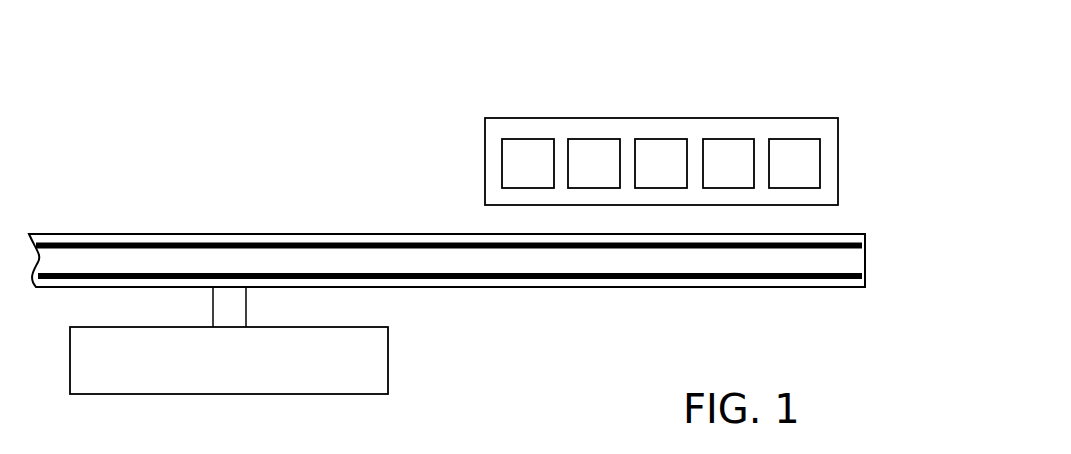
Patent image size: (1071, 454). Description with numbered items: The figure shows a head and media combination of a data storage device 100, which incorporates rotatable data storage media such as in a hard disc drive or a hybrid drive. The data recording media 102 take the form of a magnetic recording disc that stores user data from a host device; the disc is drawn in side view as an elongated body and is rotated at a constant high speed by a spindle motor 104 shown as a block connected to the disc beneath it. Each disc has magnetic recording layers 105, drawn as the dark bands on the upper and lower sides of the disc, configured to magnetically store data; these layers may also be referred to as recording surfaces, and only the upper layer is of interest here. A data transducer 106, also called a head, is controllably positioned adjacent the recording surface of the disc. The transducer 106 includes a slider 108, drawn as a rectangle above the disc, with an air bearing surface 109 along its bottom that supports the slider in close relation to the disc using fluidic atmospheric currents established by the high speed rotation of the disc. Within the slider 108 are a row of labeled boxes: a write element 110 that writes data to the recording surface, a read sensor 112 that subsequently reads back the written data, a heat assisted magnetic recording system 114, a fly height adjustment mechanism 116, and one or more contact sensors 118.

The data storage device 100 is at (140, 77).
The data recording media 102 is at (297, 234).
The spindle motor 104 is at (388, 361).
The magnetic recording layers 105 is at (174, 238).
The data transducer 106 is at (446, 149).
The slider 108 is at (838, 132).
The air bearing surface 109 is at (807, 205).
The write element 110 is at (527, 139).
The read sensor 112 is at (593, 139).
The heat assisted magnetic recording system 114 is at (660, 139).
The fly height adjustment mechanism 116 is at (726, 139).
The contact sensors 118 is at (789, 139).